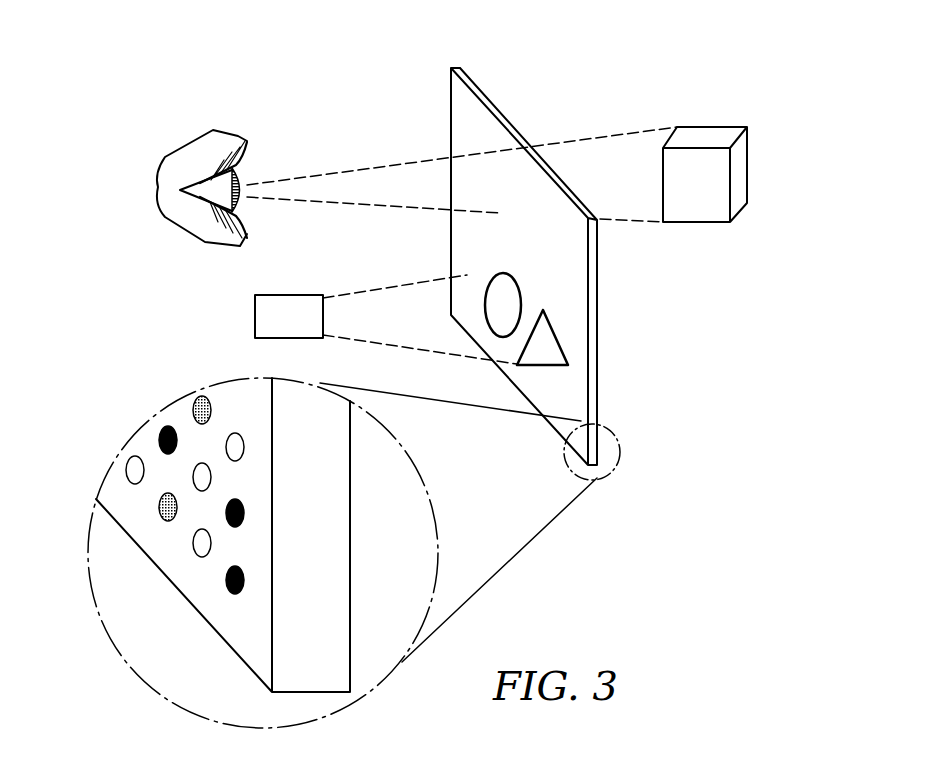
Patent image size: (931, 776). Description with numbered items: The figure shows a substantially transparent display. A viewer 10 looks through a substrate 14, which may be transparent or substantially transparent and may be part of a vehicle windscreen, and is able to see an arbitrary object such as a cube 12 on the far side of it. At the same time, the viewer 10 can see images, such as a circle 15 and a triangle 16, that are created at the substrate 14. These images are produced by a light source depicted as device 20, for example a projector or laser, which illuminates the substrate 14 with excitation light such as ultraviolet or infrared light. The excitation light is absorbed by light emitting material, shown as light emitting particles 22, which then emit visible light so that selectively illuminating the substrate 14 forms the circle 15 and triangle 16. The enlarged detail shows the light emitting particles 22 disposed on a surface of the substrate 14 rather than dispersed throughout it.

The viewer 10 is at (243, 173).
The cube 12 is at (710, 135).
The substrate 14 is at (493, 112).
The circle 15 is at (487, 300).
The triangle 16 is at (535, 344).
The device 20 is at (288, 295).
The light emitting particles 22 is at (200, 410).